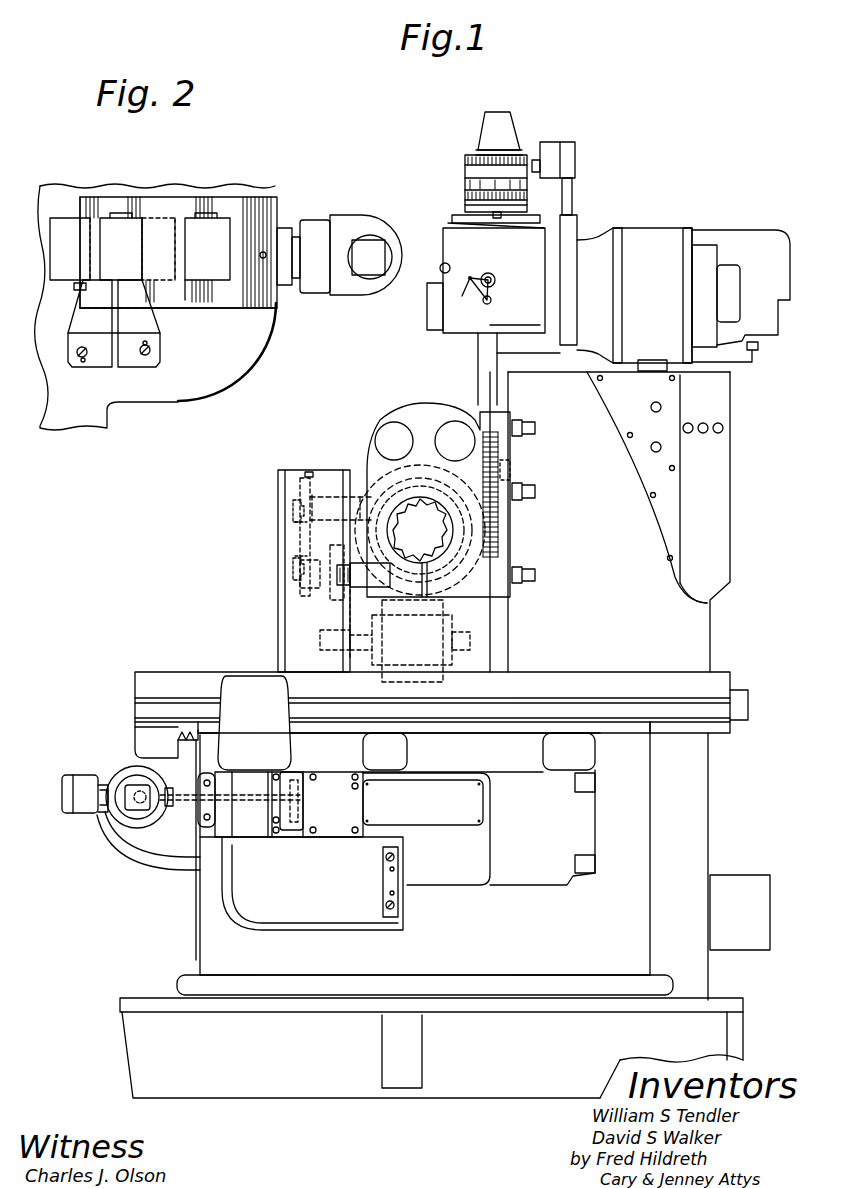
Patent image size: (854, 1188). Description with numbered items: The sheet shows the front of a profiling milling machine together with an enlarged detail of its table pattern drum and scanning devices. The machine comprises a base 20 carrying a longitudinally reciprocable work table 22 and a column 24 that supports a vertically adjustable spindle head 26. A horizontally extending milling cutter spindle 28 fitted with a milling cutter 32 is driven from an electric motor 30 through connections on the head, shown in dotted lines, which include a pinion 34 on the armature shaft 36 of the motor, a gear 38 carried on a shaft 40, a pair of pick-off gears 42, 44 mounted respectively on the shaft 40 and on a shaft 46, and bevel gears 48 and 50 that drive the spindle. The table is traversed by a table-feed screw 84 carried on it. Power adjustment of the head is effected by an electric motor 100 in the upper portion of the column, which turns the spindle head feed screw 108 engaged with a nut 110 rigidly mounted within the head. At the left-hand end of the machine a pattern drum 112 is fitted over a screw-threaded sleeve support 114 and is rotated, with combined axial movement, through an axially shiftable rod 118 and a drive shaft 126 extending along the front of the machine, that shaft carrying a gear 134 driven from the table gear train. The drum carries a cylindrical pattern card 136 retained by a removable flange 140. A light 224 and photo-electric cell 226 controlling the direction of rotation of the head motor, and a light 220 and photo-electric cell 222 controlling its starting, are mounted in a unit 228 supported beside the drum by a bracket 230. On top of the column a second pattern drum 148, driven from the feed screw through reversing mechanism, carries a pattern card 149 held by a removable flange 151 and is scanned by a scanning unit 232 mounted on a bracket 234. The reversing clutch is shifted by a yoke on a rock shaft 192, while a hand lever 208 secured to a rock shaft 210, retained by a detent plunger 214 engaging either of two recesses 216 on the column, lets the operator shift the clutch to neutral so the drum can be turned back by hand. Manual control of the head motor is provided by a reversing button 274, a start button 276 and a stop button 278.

In FIG. 2, the base 20 is at (172, 392).
In FIG. 1, the base 20 is at (478, 947).
In FIG. 1, the work table 22 is at (585, 686).
In FIG. 1, the column 24 is at (475, 333).
In FIG. 1, the spindle head 26 is at (425, 407).
In FIG. 1, the milling cutter spindle 28 is at (420, 500).
In FIG. 1, the electric motor 30 is at (424, 660).
In FIG. 1, the milling cutter 32 is at (420, 530).
In FIG. 1, the pinion 34 is at (330, 650).
In FIG. 1, the armature shaft 36 is at (364, 665).
In FIG. 1, the gear 38 is at (330, 612).
In FIG. 1, the shaft 40 is at (292, 565).
In FIG. 1, the pick-off gear 42 is at (300, 590).
In FIG. 1, the pick-off gear 44 is at (305, 478).
In FIG. 1, the shaft 46 is at (341, 497).
In FIG. 1, the bevel gear 48 is at (376, 587).
In FIG. 1, the bevel gear 50 is at (466, 575).
In FIG. 1, the table-feed screw 84 is at (200, 745).
In FIG. 1, the electric motor 100 is at (660, 316).
In FIG. 1, the spindle head feed screw 108 is at (500, 503).
In FIG. 1, the nut 110 is at (505, 470).
In FIG. 2, the pattern drum 112 is at (268, 215).
In FIG. 1, the pattern drum 112 is at (110, 770).
In FIG. 2, the sleeve support 114 is at (308, 228).
In FIG. 1, the axially shiftable rod 118 is at (140, 805).
In FIG. 1, the drive shaft 126 is at (246, 800).
In FIG. 1, the gear 134 is at (300, 825).
In FIG. 2, the pattern card 136 is at (245, 290).
In FIG. 2, the removable flange 140 is at (85, 287).
In FIG. 1, the pattern drum 148 is at (468, 210).
In FIG. 1, the pattern card 149 is at (470, 170).
In FIG. 1, the removable flange 151 is at (478, 138).
In FIG. 1, the rock shaft 192 is at (462, 258).
In FIG. 1, the hand lever 208 is at (492, 292).
In FIG. 1, the rock shaft 210 is at (491, 274).
In FIG. 1, the detent plunger 214 is at (491, 302).
In FIG. 1, the recesses 216 is at (470, 292).
In FIG. 2, the light 220 is at (108, 230).
In FIG. 2, the photo-electric cell 222 is at (66, 230).
In FIG. 2, the light 224 is at (222, 228).
In FIG. 1, the light 224 is at (95, 775).
In FIG. 2, the photo-electric cell 226 is at (165, 225).
In FIG. 1, the photo-electric cell 226 is at (68, 813).
In FIG. 2, the unit 228 is at (185, 290).
In FIG. 2, the bracket 230 is at (160, 343).
In FIG. 1, the bracket 230 is at (115, 855).
In FIG. 1, the scanning unit 232 is at (572, 155).
In FIG. 1, the bracket 234 is at (574, 195).
In FIG. 1, the reversing button 274 is at (705, 435).
In FIG. 1, the start button 276 is at (724, 428).
In FIG. 1, the stop button 278 is at (690, 422).